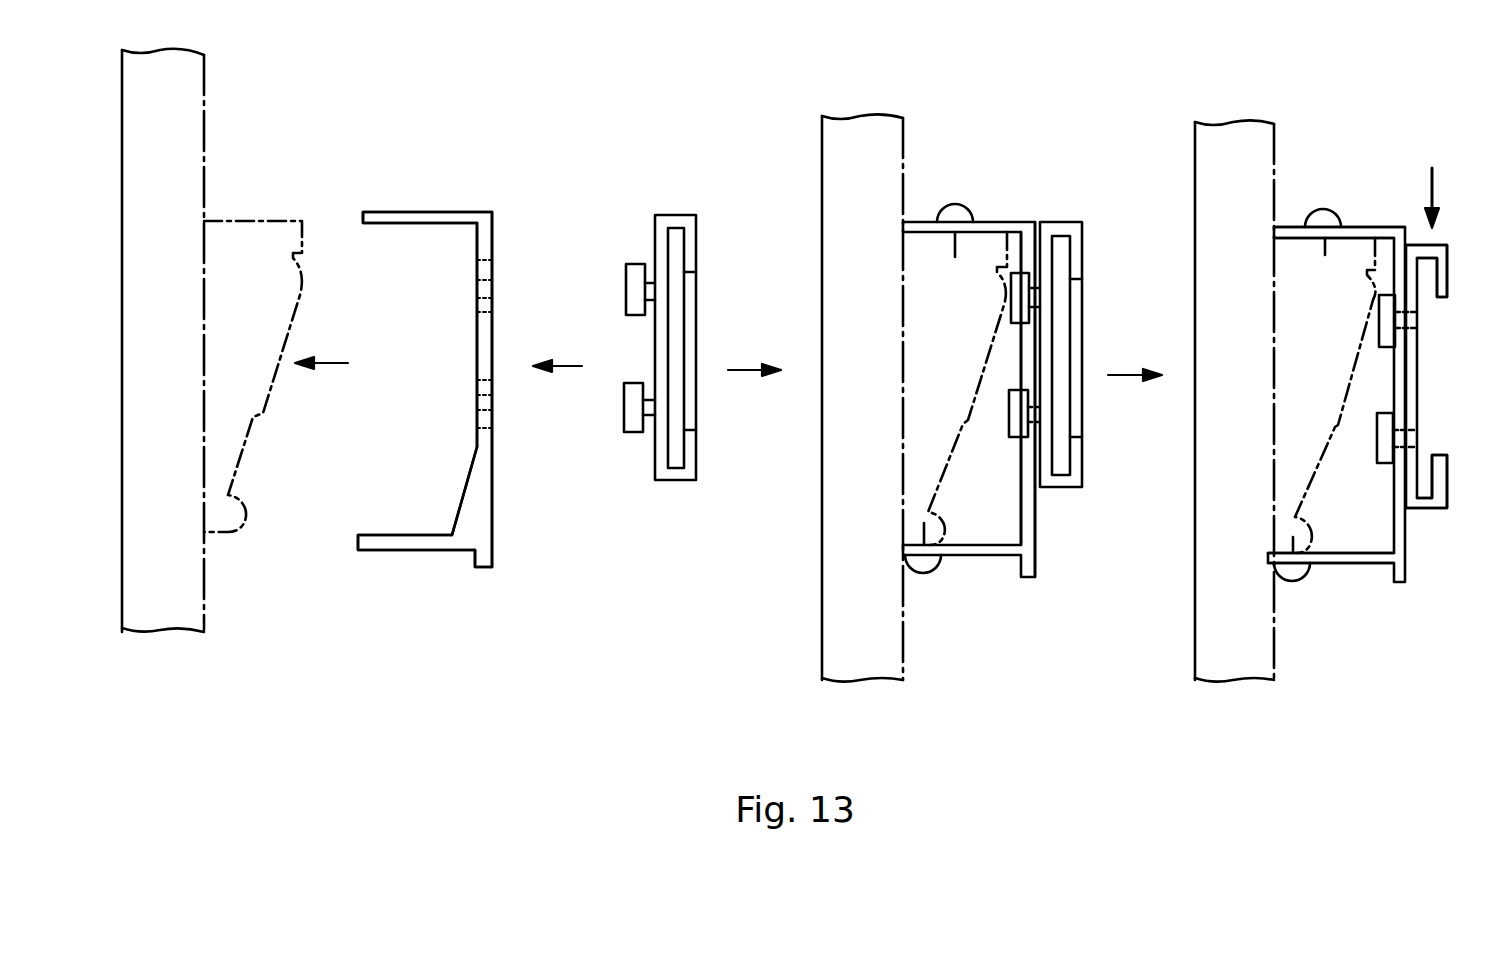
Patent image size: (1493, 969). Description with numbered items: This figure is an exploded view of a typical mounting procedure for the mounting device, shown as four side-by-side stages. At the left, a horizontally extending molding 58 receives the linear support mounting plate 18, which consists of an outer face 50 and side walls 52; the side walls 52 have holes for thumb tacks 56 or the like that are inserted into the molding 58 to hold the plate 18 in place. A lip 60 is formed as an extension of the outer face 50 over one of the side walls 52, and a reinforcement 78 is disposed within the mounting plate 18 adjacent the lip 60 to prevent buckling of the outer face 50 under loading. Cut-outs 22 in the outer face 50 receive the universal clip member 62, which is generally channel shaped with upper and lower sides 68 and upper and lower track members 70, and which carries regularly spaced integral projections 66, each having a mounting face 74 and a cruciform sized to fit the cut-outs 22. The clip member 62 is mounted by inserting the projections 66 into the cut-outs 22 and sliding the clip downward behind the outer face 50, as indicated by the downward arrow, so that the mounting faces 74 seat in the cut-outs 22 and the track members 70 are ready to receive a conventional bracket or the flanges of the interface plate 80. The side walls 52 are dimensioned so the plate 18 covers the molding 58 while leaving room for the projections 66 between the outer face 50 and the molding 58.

The linear support mounting plate 18 is at (462, 195).
The cut-outs 22 is at (493, 283).
The outer face 50 is at (493, 340).
The side walls 52 is at (395, 212).
The thumb tacks 56 is at (952, 214).
The molding 58 is at (252, 233).
The lip 60 is at (493, 563).
The universal clip member 62 is at (688, 189).
The integral projections 66 is at (636, 264).
The upper and lower sides 68 is at (1366, 227).
The upper and lower track members 70 is at (1443, 284).
The mounting face 74 is at (1398, 437).
The reinforcement 78 is at (462, 492).
The interface plate 80 is at (1402, 365).